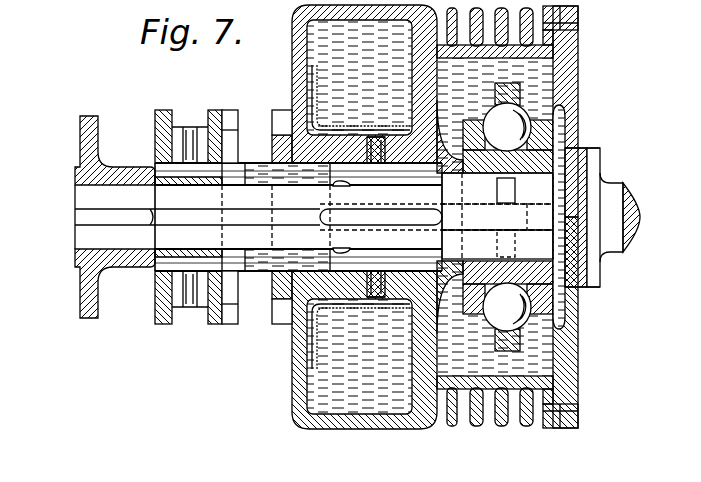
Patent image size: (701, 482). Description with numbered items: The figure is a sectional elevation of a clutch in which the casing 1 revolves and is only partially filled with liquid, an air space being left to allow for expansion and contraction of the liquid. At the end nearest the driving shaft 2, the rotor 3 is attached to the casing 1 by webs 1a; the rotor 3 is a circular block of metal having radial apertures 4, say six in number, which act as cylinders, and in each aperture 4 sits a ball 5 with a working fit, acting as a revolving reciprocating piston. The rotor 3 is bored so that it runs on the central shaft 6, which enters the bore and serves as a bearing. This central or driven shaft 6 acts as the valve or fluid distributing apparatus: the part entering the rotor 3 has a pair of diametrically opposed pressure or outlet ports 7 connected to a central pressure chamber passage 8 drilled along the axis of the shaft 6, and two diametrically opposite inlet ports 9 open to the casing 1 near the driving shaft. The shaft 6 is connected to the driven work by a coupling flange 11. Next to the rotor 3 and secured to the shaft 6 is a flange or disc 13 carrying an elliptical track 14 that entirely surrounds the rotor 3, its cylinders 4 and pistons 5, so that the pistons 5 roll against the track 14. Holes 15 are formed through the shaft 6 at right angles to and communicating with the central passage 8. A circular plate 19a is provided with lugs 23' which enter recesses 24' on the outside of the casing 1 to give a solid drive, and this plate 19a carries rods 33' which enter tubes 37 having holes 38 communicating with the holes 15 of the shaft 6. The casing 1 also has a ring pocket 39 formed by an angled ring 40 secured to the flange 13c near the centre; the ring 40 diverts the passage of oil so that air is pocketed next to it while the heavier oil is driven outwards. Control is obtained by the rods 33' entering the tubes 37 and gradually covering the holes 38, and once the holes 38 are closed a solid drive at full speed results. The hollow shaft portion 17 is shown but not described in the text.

The casing 1 is at (576, 52).
The webs 1a is at (562, 114).
The driving shaft 2 is at (618, 250).
The rotor 3 is at (562, 142).
The radial apertures 4 is at (598, 174).
The ball 5 is at (508, 217).
The central shaft 6 is at (542, 192).
The pressure or outlet ports 7 is at (506, 243).
The central pressure chamber passage 8 is at (418, 252).
The inlet ports 9 is at (625, 270).
The coupling flange 11 is at (78, 136).
The flange or disc 13 is at (417, 86).
The flange 13c is at (455, 360).
The elliptical track 14 is at (520, 95).
The holes 15 is at (352, 188).
The hollow shaft 17 is at (314, 217).
The circular plate 19a is at (160, 110).
The lugs 23' is at (215, 210).
The recesses 24' is at (270, 215).
The rods 33' is at (283, 218).
The tubes 37 is at (272, 305).
The holes 38 is at (336, 184).
The ring pocket 39 is at (360, 217).
The angled ring 40 is at (327, 128).